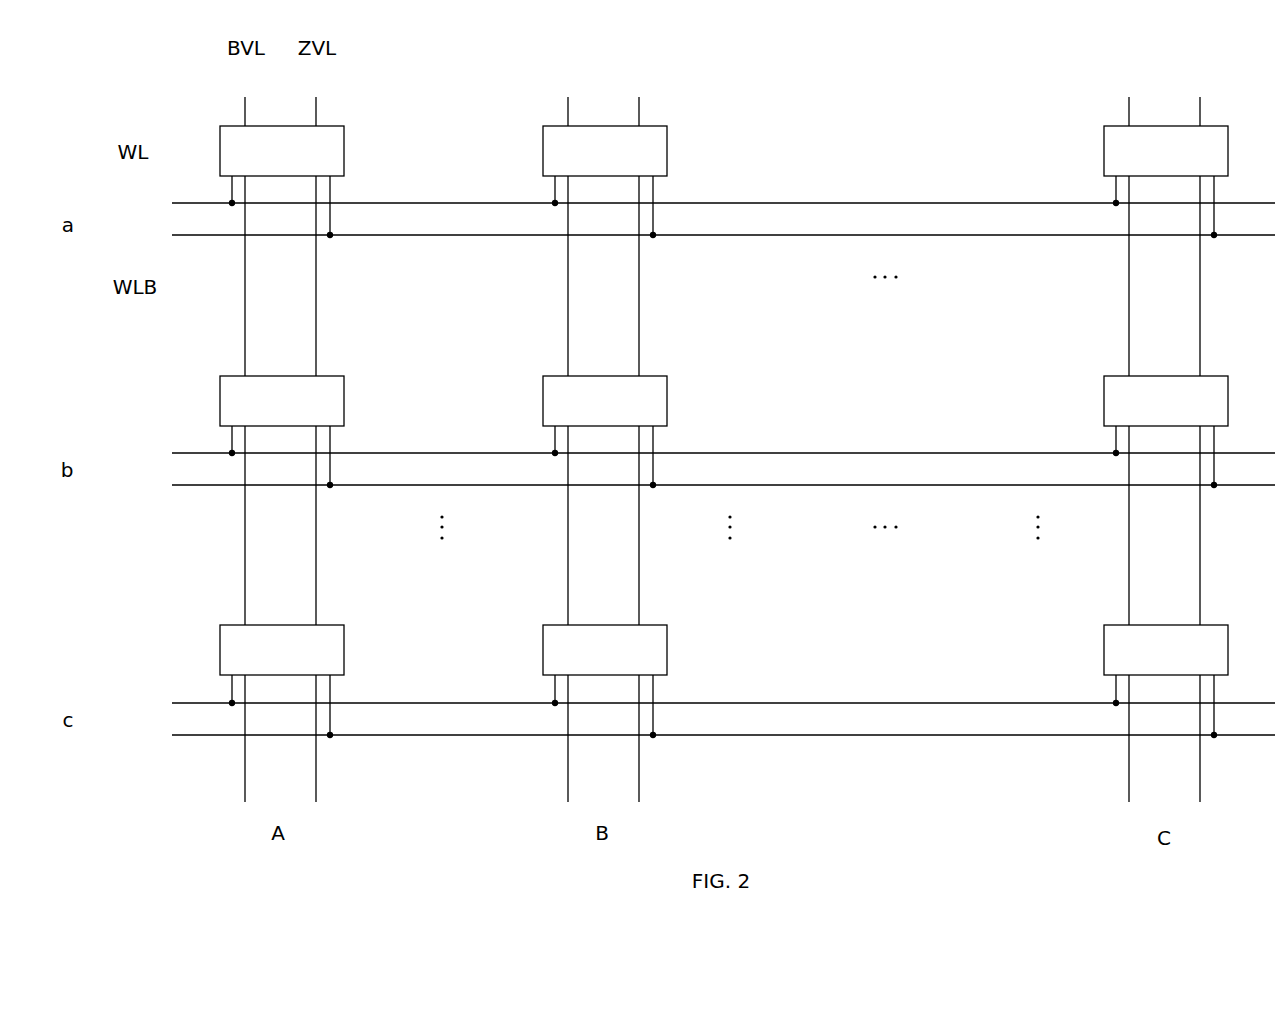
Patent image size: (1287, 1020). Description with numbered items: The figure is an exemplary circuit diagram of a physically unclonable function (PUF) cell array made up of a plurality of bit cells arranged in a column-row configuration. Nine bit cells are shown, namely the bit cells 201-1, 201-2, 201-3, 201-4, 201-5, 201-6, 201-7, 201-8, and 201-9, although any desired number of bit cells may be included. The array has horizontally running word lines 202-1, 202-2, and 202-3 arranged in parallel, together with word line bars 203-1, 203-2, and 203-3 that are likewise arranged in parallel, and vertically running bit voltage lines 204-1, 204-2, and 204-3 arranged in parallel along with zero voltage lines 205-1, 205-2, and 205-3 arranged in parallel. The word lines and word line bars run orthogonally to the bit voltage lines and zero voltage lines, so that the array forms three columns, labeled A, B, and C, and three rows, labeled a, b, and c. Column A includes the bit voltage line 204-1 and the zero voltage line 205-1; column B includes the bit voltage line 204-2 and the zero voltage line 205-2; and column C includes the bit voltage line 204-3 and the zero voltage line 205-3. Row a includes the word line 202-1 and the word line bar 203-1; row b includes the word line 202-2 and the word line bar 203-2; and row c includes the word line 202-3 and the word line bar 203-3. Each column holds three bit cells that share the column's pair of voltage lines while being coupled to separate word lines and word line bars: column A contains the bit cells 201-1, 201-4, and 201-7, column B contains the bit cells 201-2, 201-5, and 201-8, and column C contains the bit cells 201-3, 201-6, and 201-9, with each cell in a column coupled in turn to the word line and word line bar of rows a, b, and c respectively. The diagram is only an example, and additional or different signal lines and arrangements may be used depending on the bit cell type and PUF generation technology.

The word line 202-1 is at (689, 203).
The word line bar 203-1 is at (689, 235).
The word line 202-2 is at (689, 453).
The word line bar 203-2 is at (689, 485).
The word line 202-3 is at (689, 703).
The word line bar 203-3 is at (689, 735).
The bit voltage line 204-1 is at (245, 437).
The zero voltage line 205-1 is at (316, 437).
The bit voltage line 204-2 is at (568, 437).
The zero voltage line 205-2 is at (639, 437).
The bit voltage line 204-3 is at (1129, 437).
The zero voltage line 205-3 is at (1200, 437).
The bit cell 201-1 is at (252, 164).
The bit cell 201-2 is at (575, 164).
The bit cell 201-3 is at (1136, 164).
The bit cell 201-4 is at (252, 414).
The bit cell 201-5 is at (575, 414).
The bit cell 201-6 is at (1136, 414).
The bit cell 201-7 is at (252, 663).
The bit cell 201-8 is at (575, 663).
The bit cell 201-9 is at (1136, 663).